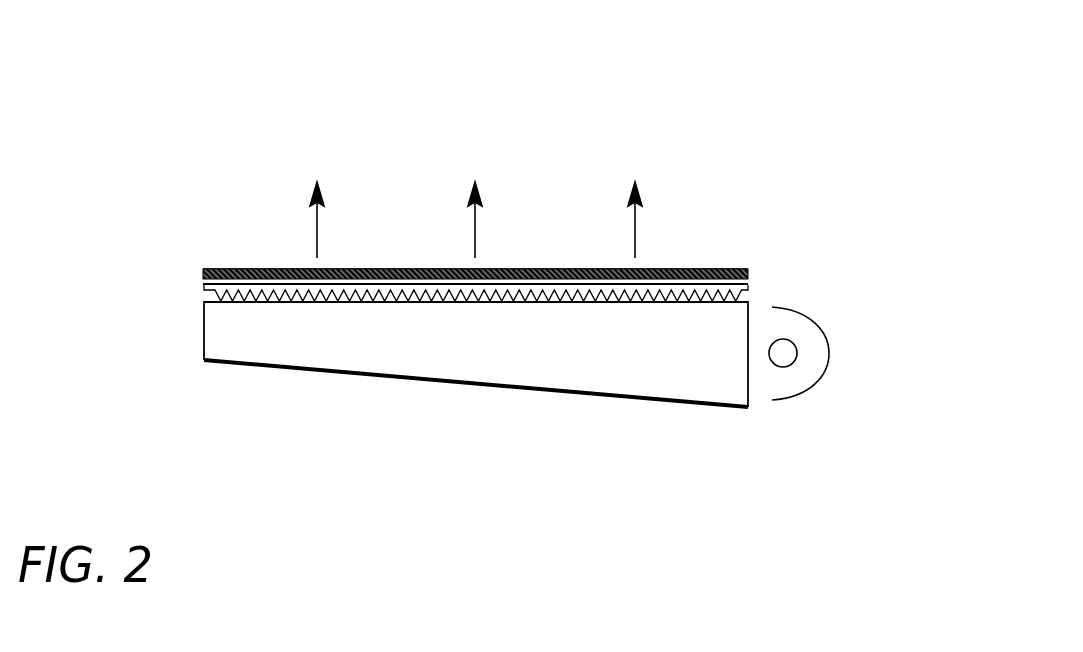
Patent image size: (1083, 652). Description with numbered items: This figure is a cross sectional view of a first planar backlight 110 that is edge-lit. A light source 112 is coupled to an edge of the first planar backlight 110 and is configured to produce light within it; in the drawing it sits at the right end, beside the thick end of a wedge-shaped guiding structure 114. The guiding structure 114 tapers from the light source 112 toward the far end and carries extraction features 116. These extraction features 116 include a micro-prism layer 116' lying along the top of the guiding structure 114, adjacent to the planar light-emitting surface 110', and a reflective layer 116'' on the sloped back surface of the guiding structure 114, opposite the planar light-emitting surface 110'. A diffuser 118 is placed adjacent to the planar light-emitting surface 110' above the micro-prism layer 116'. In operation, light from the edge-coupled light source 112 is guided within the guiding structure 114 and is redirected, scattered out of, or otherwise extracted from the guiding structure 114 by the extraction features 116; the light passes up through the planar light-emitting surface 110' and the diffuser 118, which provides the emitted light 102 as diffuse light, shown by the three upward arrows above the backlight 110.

The first planar backlight 110 is at (484, 236).
The emitted light 102 is at (688, 209).
The planar light-emitting surface 110' is at (528, 238).
The diffuser 118 is at (749, 271).
The extraction features 116 is at (390, 355).
The micro-prism layer 116' is at (390, 287).
The reflective layer 116'' is at (476, 400).
The wedge-shaped guiding structure 114 is at (204, 328).
The light source 112 is at (824, 406).